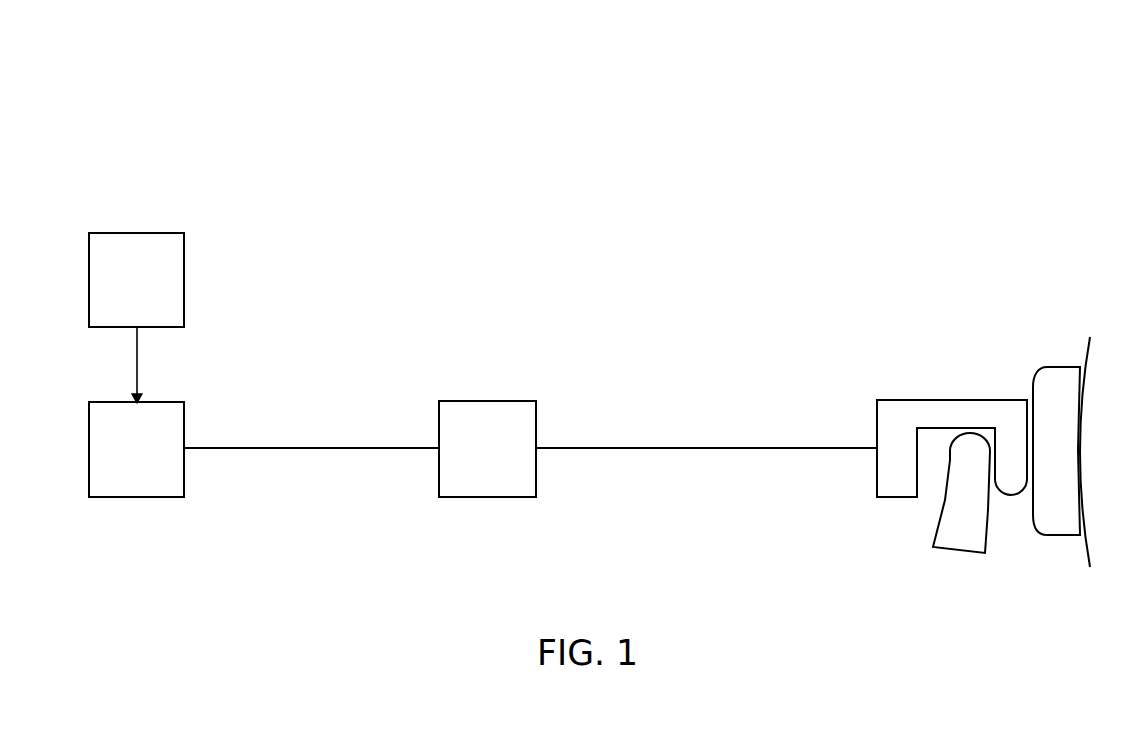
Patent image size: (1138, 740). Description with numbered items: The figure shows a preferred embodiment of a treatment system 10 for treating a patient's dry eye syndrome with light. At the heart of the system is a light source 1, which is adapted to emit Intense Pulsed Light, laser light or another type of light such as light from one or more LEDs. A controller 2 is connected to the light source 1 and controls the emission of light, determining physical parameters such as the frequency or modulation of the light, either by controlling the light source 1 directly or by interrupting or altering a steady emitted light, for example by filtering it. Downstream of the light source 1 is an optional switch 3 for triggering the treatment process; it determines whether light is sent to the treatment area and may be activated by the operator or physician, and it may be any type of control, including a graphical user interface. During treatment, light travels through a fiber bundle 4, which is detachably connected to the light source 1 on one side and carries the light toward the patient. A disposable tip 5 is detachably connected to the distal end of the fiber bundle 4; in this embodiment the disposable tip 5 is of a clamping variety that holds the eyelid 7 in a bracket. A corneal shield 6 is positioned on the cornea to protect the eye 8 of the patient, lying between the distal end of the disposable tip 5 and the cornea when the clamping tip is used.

The treatment system 10 is at (134, 116).
The light source 1 is at (122, 465).
The controller 2 is at (122, 297).
The switch 3 is at (474, 465).
The fiber bundle 4 is at (305, 446).
The disposable tip 5 is at (912, 412).
The corneal shield 6 is at (1052, 385).
The eyelid 7 is at (952, 531).
The eye 8 is at (1103, 467).